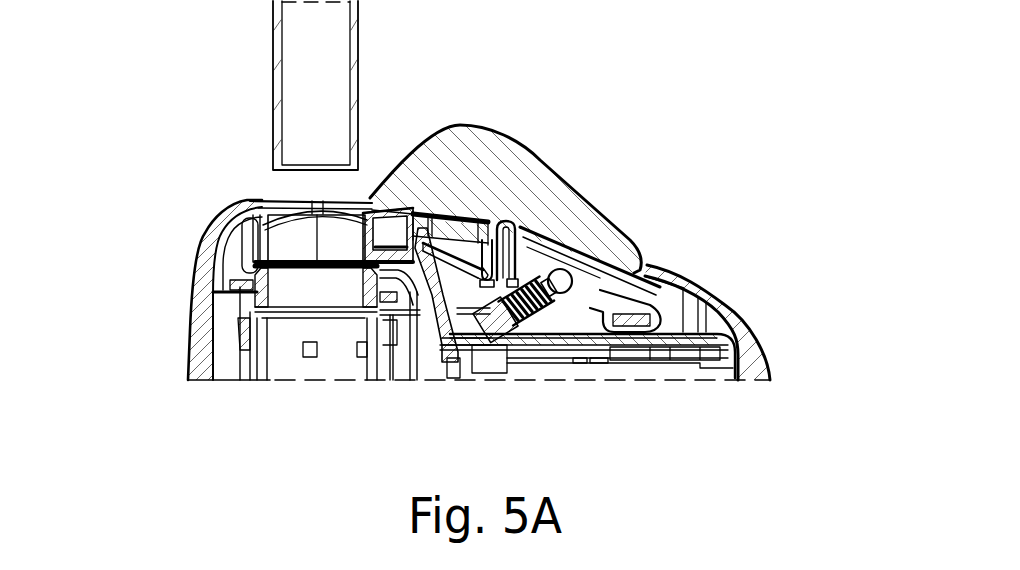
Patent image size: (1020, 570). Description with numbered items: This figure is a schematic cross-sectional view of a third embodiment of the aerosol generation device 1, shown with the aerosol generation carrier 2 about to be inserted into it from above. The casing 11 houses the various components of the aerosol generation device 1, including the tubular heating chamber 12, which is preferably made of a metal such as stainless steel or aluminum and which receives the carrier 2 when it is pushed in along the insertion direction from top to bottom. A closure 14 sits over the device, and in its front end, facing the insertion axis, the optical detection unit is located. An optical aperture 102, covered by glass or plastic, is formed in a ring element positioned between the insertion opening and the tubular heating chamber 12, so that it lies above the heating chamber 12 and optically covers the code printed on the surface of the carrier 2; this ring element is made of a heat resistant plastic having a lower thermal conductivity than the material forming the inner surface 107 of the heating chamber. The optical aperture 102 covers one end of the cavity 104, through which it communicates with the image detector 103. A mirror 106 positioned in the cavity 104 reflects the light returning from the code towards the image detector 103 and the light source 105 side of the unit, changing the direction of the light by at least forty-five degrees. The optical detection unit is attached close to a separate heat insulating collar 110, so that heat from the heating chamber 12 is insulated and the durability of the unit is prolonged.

The aerosol generation device 1 is at (707, 272).
The aerosol generation carrier 2 is at (307, 32).
The casing 11 is at (220, 223).
The tubular heating chamber 12 is at (364, 372).
The closure 14 is at (598, 185).
The optical aperture 102 is at (383, 227).
The image detector 103 is at (418, 232).
The cavity 104 is at (407, 216).
The light source 105 is at (450, 228).
The mirror 106 is at (420, 222).
The inner surface 107 is at (272, 213).
The separate heat insulating collar 110 is at (380, 255).